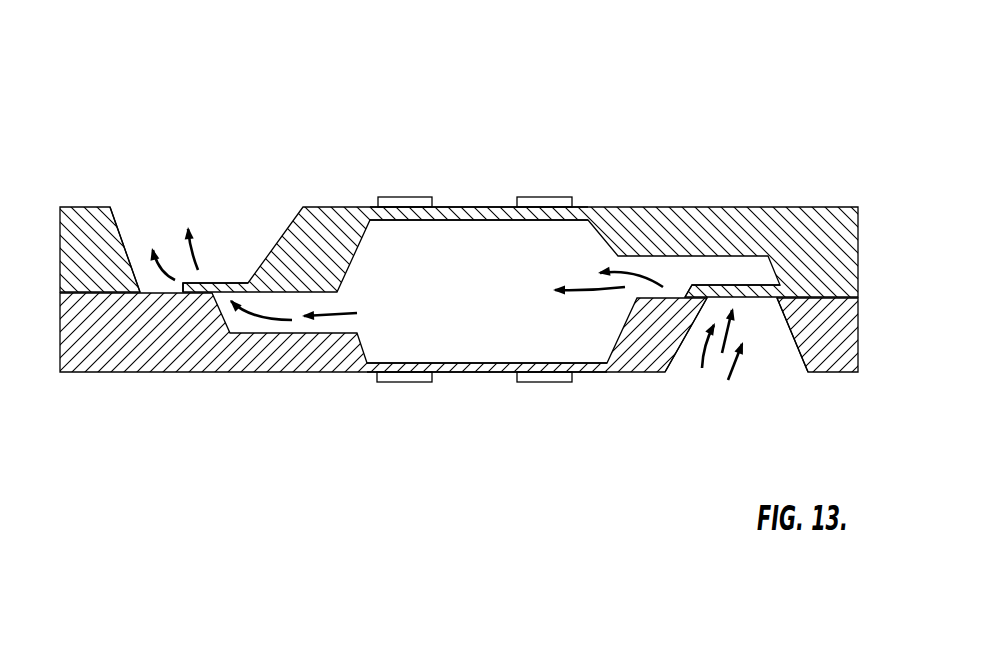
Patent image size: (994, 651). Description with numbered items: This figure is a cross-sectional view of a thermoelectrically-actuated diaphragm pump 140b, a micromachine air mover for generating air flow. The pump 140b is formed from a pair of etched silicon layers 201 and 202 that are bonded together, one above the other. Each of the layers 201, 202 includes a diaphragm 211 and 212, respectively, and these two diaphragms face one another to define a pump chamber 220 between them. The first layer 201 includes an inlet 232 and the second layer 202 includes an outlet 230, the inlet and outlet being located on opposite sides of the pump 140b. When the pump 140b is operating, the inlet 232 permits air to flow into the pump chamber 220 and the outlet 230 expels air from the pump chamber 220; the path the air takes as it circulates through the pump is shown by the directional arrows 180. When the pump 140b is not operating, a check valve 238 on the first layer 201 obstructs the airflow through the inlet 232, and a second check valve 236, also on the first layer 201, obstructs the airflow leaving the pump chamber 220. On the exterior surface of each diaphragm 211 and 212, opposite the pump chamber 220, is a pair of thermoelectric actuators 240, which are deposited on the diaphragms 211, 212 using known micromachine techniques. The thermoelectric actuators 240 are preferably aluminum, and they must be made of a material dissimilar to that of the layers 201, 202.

The thermoelectrically-actuated diaphragm pump 140b is at (360, 66).
The directional arrows 180 is at (174, 272).
The first etched silicon layer 201 is at (735, 218).
The second etched silicon layer 202 is at (145, 348).
The diaphragm 211 is at (483, 206).
The diaphragm 212 is at (472, 374).
The pump chamber 220 is at (492, 305).
The outlet 230 is at (219, 181).
The inlet 232 is at (737, 392).
The second check valve 236 is at (223, 282).
The check valve 238 is at (740, 285).
The thermoelectric actuators 240 is at (404, 196).